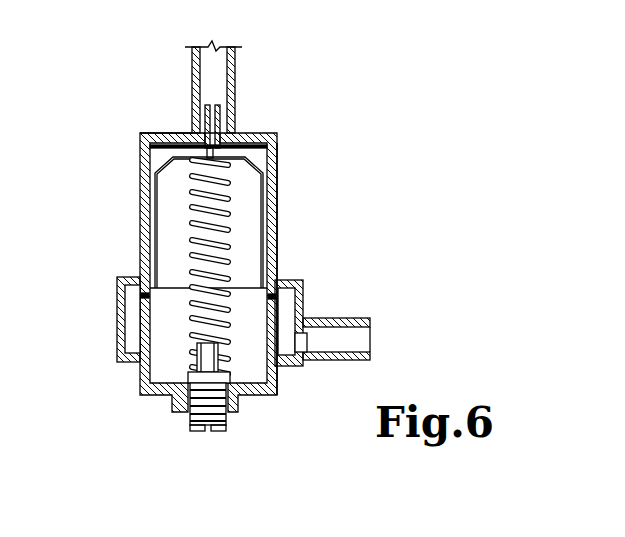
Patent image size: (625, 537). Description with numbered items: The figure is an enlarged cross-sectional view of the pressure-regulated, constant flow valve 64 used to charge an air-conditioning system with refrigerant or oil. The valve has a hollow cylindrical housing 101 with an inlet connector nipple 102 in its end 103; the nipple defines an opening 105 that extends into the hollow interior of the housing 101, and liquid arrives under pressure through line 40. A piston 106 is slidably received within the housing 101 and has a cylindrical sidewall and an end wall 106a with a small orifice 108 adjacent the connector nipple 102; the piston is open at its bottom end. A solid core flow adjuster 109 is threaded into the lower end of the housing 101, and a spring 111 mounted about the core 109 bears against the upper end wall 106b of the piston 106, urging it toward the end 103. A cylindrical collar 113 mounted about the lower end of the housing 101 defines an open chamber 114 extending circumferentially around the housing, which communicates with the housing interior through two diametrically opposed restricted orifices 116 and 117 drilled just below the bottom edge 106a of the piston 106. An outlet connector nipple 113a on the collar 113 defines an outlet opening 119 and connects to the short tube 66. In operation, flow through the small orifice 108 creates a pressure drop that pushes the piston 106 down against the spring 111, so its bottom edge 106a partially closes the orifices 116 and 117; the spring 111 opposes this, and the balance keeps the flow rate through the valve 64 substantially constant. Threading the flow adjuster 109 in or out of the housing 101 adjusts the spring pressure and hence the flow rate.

The constant flow valve 64 is at (312, 139).
The line 40 is at (192, 62).
The opening 105 is at (203, 108).
The inlet connector nipple 102 is at (222, 118).
The end of housing 103 is at (140, 128).
The piston 106 is at (150, 232).
The end wall / bottom edge of piston 106a is at (182, 155).
The upper end wall of piston 106b is at (152, 183).
The small orifice 108 is at (240, 150).
The hollow cylindrical housing 101 is at (277, 240).
The spring 111 is at (190, 258).
The restricted orifice 116 is at (146, 297).
The restricted orifice 117 is at (270, 296).
The cylindrical collar 113 is at (117, 312).
The open chamber 114 is at (128, 352).
The outlet connector nipple 113a is at (310, 325).
The outlet opening 119 is at (305, 355).
The short tube 66 is at (358, 361).
The solid core flow adjuster 109 is at (226, 424).